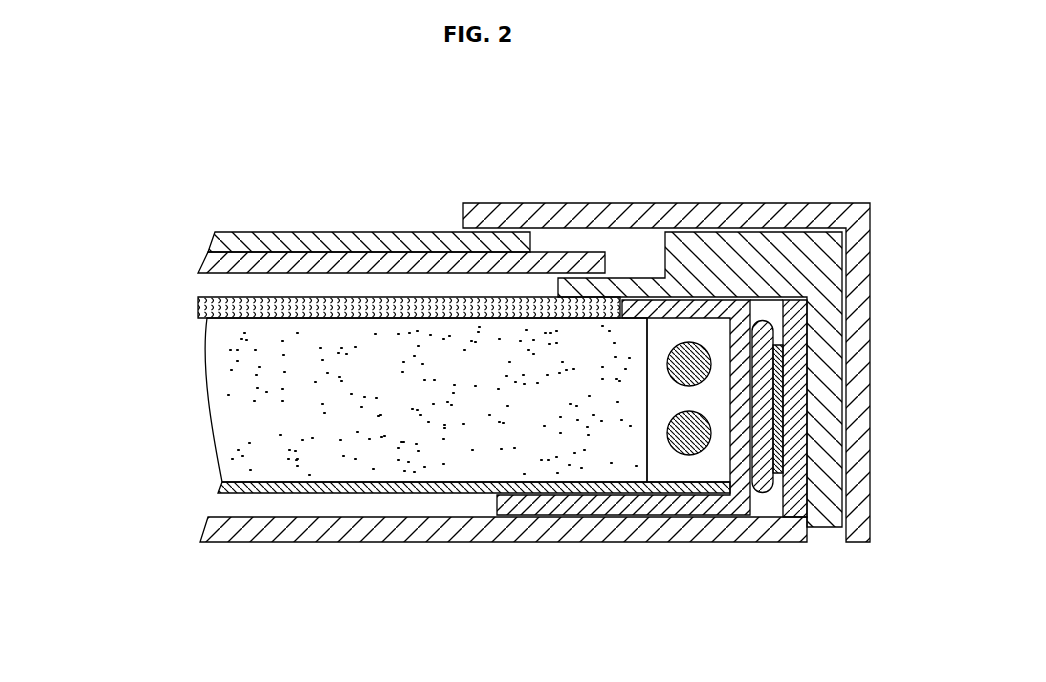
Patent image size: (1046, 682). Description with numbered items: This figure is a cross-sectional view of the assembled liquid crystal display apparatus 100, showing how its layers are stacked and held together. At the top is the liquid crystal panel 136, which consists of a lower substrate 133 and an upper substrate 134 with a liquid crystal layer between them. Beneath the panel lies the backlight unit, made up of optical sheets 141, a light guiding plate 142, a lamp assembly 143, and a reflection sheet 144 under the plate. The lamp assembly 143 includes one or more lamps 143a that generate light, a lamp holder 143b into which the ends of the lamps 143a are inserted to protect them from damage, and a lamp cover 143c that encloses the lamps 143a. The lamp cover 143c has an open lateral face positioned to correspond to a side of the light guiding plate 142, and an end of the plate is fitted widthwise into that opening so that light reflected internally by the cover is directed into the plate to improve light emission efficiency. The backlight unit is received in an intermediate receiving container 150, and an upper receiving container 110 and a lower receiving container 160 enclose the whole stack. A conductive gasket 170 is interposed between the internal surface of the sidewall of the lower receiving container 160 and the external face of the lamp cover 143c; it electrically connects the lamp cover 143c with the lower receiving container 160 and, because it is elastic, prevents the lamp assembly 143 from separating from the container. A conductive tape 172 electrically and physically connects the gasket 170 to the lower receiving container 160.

The liquid crystal display apparatus 100 is at (320, 172).
The upper receiving container 110 is at (858, 263).
The lower substrate 133 is at (205, 261).
The upper substrate 134 is at (212, 241).
The liquid crystal panel 136 is at (98, 232).
The optical sheets 141 is at (196, 298).
The light guiding plate 142 is at (230, 383).
The lamp assembly 143 is at (623, 481).
The lamps 143a is at (651, 468).
The lamp holder 143b is at (600, 515).
The lamp cover 143c is at (692, 458).
The reflection sheet 144 is at (224, 483).
The intermediate receiving container 150 is at (830, 332).
The lower receiving container 160 is at (797, 385).
The conductive gasket 170 is at (766, 425).
The conductive tape 172 is at (778, 452).